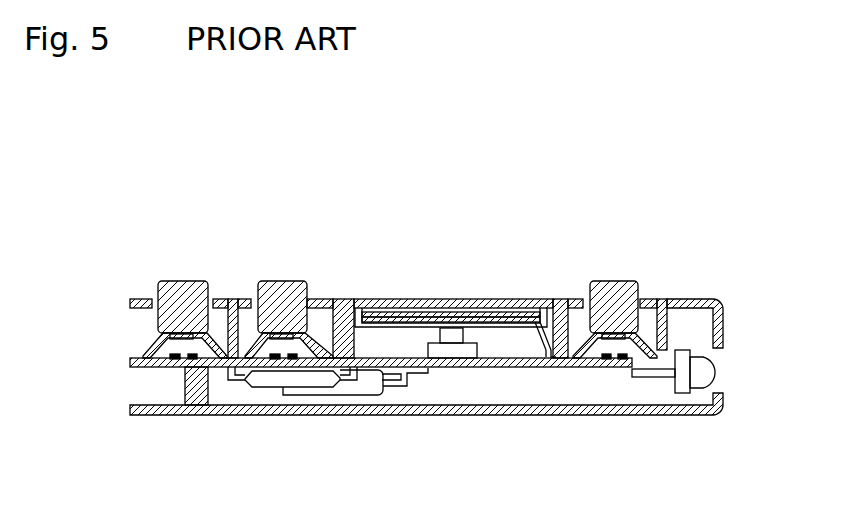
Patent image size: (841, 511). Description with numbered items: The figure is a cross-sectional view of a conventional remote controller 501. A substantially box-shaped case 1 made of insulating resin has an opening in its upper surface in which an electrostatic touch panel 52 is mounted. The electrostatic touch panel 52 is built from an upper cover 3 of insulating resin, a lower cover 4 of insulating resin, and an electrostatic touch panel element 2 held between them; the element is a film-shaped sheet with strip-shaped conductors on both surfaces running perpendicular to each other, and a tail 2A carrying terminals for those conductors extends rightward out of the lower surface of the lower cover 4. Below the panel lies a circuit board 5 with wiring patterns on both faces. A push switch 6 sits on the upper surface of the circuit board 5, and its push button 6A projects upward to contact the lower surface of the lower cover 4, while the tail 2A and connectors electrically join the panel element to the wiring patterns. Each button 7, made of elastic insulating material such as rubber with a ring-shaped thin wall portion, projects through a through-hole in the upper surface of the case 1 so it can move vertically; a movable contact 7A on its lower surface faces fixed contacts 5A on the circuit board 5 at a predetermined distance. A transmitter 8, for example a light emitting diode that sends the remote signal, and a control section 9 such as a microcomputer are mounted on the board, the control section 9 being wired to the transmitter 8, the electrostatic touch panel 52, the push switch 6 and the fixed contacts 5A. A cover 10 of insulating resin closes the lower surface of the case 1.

The remote controller 501 is at (702, 198).
The case 1 is at (699, 298).
The electrostatic touch panel element 2 is at (431, 316).
The tail 2A is at (546, 362).
The upper cover 3 is at (400, 306).
The lower cover 4 is at (482, 318).
The circuit board 5 is at (505, 366).
The fixed contacts 5A is at (622, 360).
The push switch 6 is at (441, 352).
The push button 6A is at (455, 336).
The button 7 is at (260, 282).
The movable contact 7A is at (616, 339).
The transmitter 8 is at (704, 376).
The control section 9 is at (304, 392).
The cover 10 is at (236, 411).
The electrostatic touch panel 52 is at (515, 220).